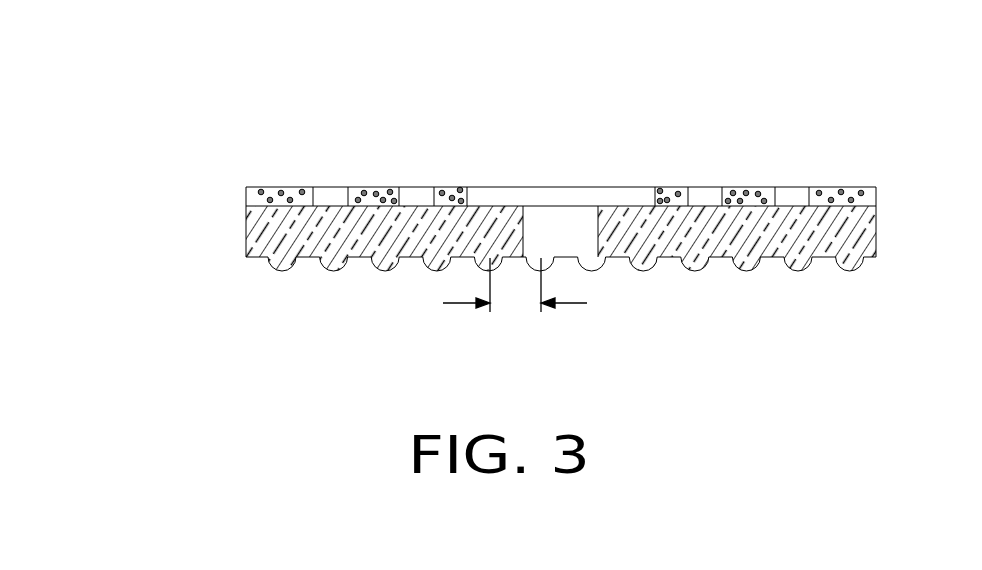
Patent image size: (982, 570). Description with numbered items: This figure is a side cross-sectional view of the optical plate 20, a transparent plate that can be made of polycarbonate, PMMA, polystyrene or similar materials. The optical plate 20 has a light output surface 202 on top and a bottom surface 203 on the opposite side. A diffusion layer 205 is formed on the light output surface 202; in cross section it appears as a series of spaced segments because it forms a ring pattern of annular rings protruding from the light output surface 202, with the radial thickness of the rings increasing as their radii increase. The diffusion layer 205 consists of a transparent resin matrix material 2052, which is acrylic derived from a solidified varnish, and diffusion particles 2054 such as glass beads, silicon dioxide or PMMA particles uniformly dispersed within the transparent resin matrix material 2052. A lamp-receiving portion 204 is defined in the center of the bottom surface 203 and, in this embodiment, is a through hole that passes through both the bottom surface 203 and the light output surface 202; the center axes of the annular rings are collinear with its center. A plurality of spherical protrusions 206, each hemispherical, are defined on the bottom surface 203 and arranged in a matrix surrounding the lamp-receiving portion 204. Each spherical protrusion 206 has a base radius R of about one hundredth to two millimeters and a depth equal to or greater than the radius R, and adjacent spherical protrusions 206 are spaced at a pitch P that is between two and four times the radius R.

The optical plate 20 is at (243, 49).
The diffusion layer 205 is at (107, 143).
The diffusion particles 2054 is at (260, 190).
The transparent resin matrix material 2052 is at (250, 200).
The light output surface 202 is at (755, 187).
The lamp-receiving portion 204 is at (553, 230).
The bottom surface 203 is at (775, 257).
The spherical protrusions 206 is at (440, 265).
The pitch P is at (515, 291).
The radius R is at (652, 268).